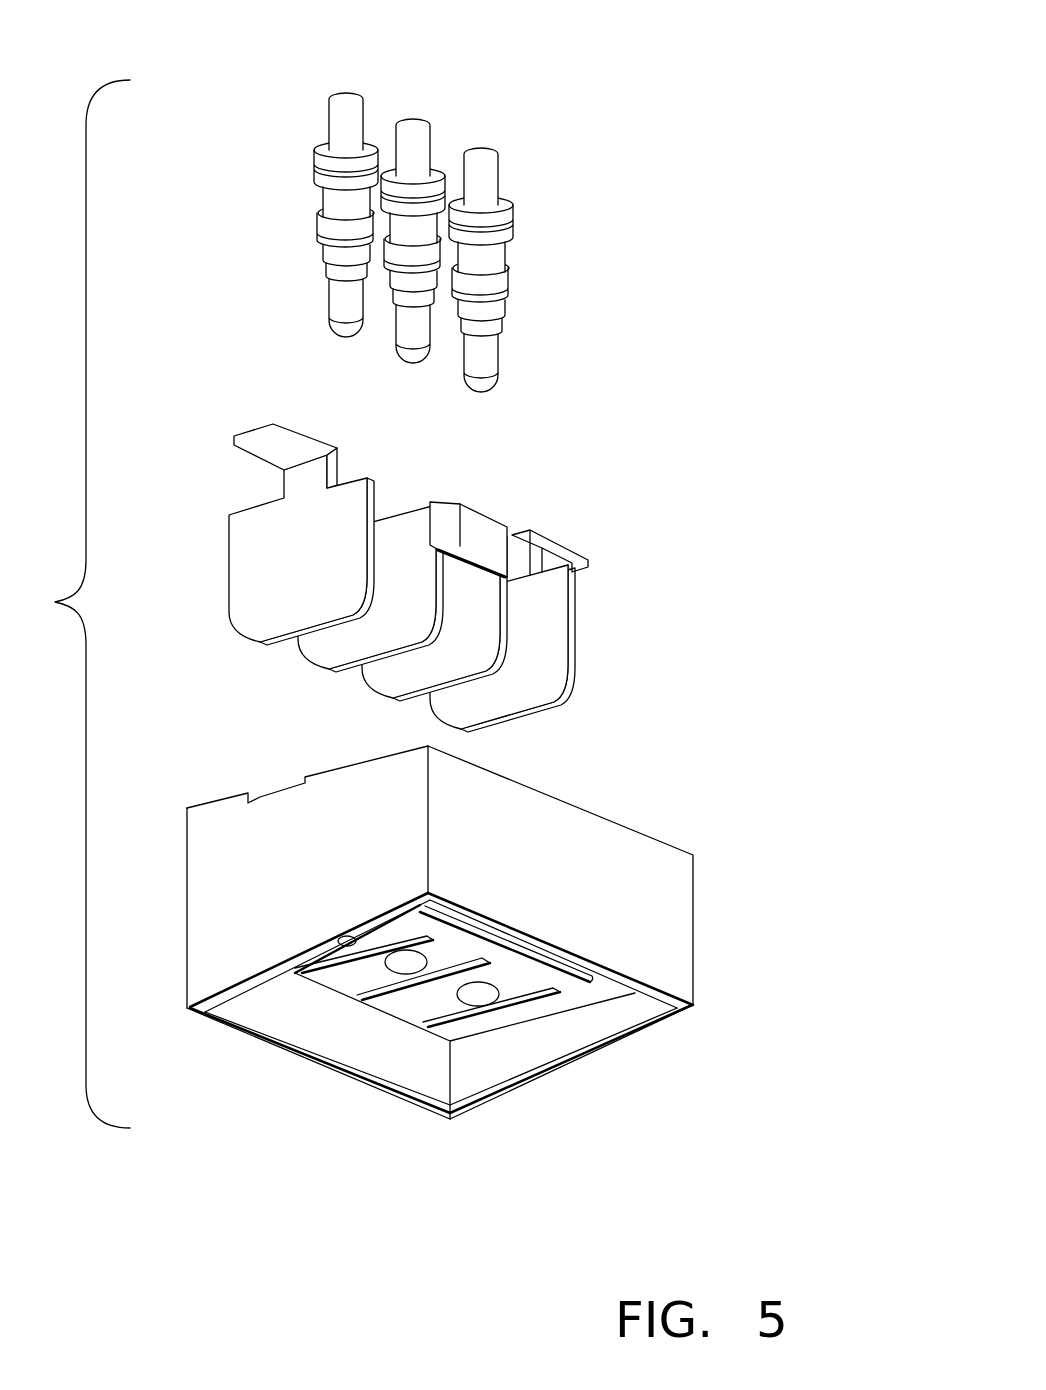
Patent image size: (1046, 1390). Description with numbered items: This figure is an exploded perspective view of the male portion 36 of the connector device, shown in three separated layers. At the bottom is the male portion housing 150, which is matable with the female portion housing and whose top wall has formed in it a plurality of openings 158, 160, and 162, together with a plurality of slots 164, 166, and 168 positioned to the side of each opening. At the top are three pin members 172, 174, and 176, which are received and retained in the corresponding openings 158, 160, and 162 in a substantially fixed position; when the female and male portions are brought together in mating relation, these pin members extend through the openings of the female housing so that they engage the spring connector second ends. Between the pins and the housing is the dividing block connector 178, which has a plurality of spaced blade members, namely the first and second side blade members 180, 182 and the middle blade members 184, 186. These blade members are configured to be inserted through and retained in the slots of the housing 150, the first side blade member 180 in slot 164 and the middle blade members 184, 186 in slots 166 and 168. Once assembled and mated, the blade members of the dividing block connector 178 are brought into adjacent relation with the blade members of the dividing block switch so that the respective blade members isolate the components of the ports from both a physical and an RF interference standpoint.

The male portion 36 is at (366, 571).
The male portion housing 150 is at (447, 932).
The opening 158 is at (500, 988).
The opening 160 is at (430, 962).
The opening 162 is at (353, 938).
The slot 164 is at (500, 1010).
The slot 166 is at (490, 963).
The slot 168 is at (427, 937).
The pin member 172 is at (483, 157).
The pin member 174 is at (412, 128).
The pin member 176 is at (345, 103).
The dividing block connector 178 is at (419, 587).
The first side blade member 180 is at (575, 612).
The second side blade member 182 is at (245, 573).
The middle blade member 184 is at (387, 685).
The middle blade member 186 is at (313, 655).